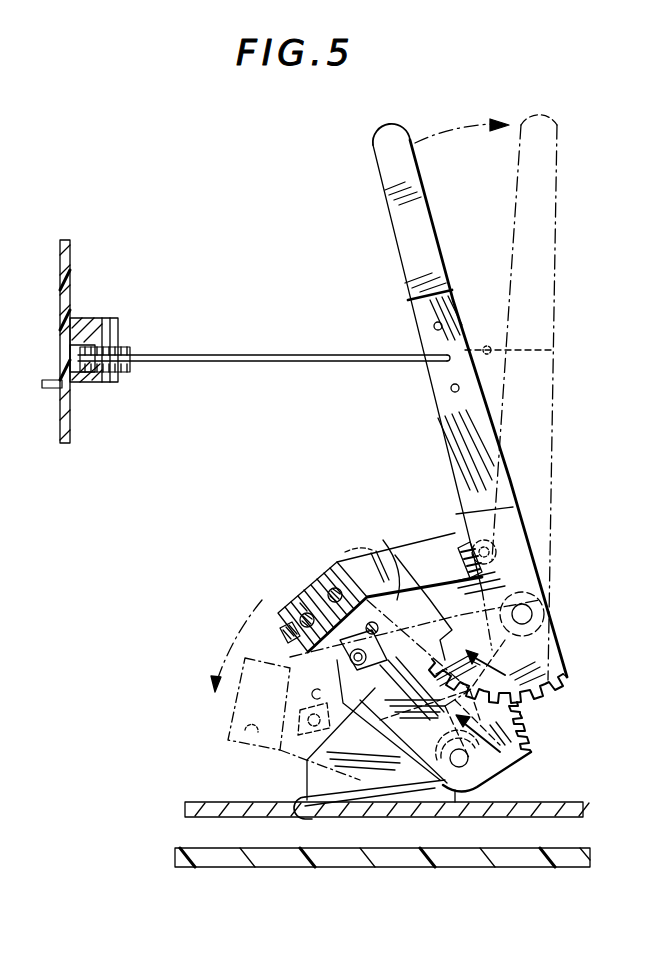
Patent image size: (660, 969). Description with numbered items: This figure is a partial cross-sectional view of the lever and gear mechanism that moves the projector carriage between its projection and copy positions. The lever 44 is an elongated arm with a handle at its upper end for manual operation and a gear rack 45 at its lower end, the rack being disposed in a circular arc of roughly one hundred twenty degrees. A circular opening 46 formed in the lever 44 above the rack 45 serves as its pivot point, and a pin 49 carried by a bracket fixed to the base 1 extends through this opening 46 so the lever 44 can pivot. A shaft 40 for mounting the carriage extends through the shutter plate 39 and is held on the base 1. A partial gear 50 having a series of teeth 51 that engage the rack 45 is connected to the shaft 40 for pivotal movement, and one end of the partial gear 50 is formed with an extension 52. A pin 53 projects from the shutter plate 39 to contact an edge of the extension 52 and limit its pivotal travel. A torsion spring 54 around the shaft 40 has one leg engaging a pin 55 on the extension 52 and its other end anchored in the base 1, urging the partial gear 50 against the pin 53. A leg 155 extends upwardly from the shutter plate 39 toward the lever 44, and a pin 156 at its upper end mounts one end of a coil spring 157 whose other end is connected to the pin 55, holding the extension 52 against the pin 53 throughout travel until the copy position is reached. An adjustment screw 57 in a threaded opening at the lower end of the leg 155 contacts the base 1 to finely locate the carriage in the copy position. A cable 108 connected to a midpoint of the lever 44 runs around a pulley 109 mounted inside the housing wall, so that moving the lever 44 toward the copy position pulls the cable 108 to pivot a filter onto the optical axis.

The base 1 is at (216, 808).
The shutter plate 39 is at (305, 586).
The shaft 40 is at (468, 767).
The lever 44 is at (400, 242).
The gear rack 45 is at (562, 688).
The circular opening 46 is at (545, 599).
The pin 49 is at (524, 614).
The partial gear 50 is at (520, 765).
The teeth 51 is at (530, 725).
The extension 52 is at (302, 600).
The pin 53 is at (402, 580).
The torsion spring 54 is at (392, 790).
The pin 55 is at (352, 657).
The adjustment screw 57 is at (288, 643).
The cable 108 is at (240, 364).
The pulley 109 is at (130, 350).
The leg 155 is at (342, 558).
The pin 156 is at (507, 556).
The coil spring 157 is at (446, 575).